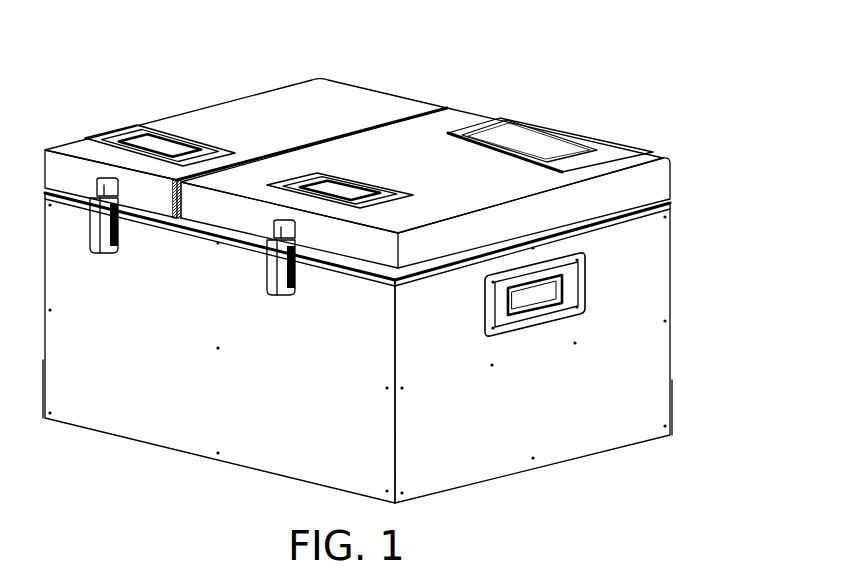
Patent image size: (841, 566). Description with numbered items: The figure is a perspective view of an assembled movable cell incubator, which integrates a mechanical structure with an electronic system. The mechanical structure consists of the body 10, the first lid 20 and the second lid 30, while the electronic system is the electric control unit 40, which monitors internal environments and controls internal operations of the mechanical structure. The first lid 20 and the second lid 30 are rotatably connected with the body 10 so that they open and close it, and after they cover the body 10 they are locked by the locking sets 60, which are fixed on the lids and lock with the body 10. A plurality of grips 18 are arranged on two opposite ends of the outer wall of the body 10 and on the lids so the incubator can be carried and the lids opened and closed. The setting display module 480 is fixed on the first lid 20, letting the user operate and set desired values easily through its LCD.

The body 10 is at (168, 455).
The grip 18 is at (172, 140).
The first lid 20 is at (674, 153).
The second lid 30 is at (382, 87).
The electric control unit 40 is at (541, 108).
The setting display module 480 is at (533, 148).
The locking set 60 is at (96, 265).